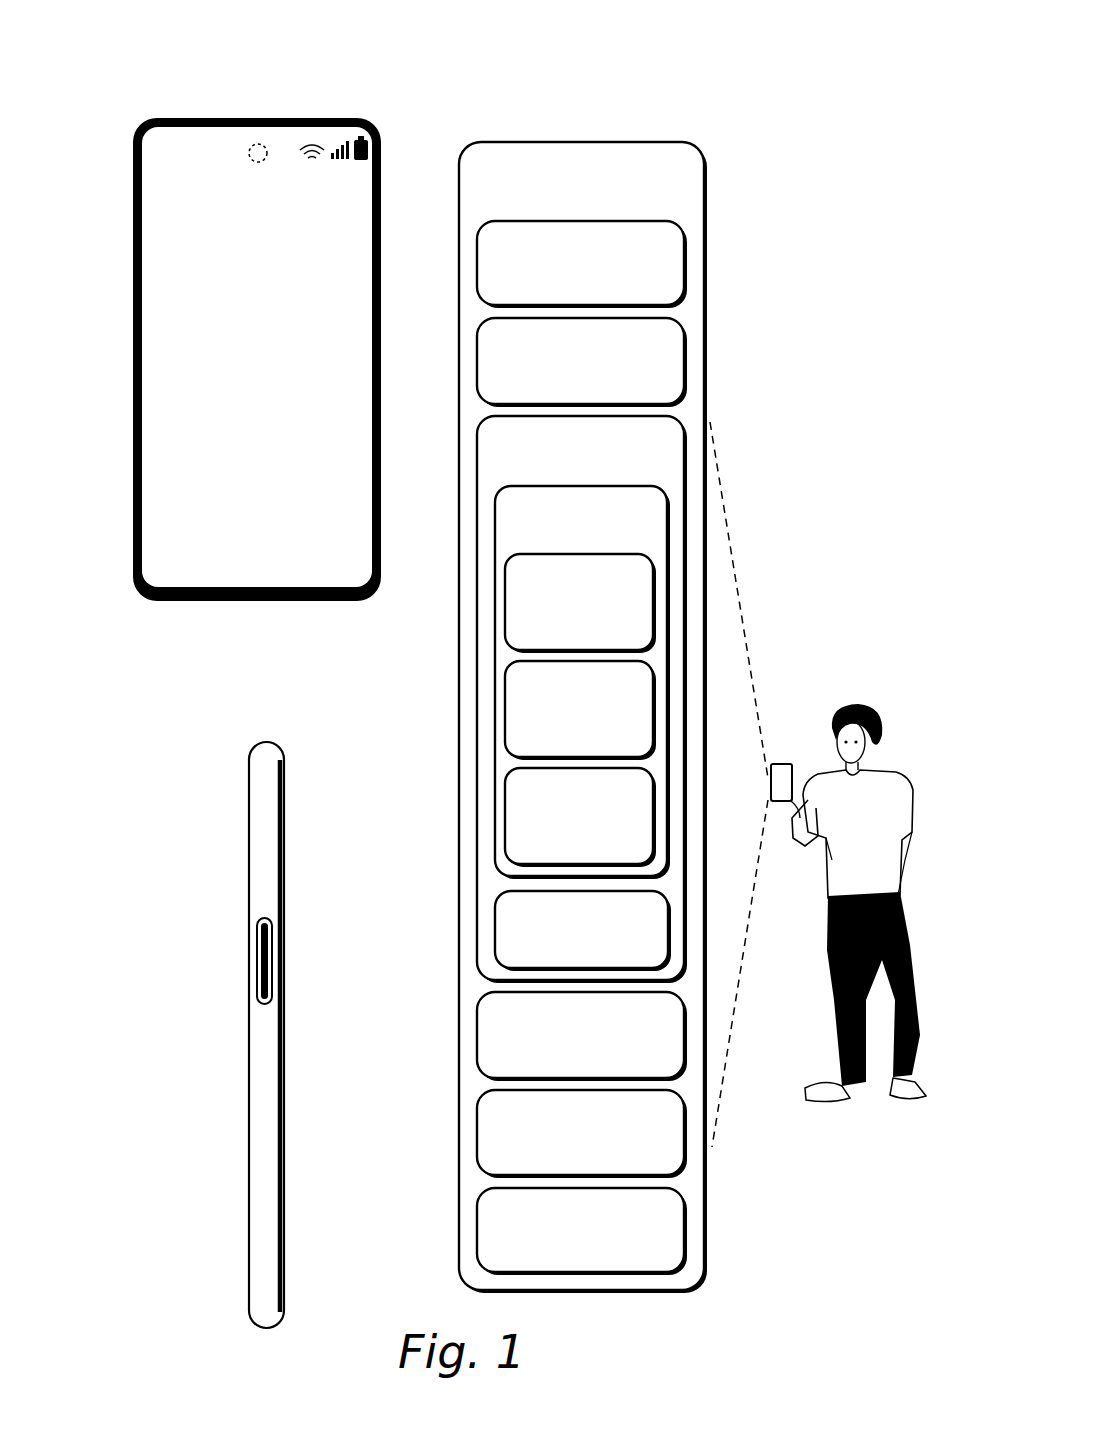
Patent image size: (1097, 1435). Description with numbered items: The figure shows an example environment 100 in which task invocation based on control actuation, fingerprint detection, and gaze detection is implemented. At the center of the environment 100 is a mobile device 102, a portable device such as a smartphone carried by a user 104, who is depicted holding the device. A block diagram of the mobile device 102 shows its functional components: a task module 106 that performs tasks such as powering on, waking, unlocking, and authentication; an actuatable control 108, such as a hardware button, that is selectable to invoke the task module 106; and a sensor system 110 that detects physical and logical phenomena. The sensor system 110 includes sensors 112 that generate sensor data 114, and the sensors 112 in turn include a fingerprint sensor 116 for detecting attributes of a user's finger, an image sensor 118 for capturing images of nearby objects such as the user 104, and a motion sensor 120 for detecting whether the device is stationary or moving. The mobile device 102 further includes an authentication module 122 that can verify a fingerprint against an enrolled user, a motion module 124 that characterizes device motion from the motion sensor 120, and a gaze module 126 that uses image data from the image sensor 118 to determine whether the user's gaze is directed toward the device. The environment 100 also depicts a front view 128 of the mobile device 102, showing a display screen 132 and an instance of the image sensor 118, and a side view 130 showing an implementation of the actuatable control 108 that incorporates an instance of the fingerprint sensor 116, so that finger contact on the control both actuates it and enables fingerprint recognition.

The environment 100 is at (808, 68).
The mobile device 102 is at (283, 800).
The user 104 is at (890, 790).
The task module 106 is at (582, 264).
The actuatable control 108 is at (200, 893).
The sensor system 110 is at (582, 699).
The sensors 112 is at (582, 682).
The sensor data 114 is at (583, 931).
The fingerprint sensor 116 is at (205, 940).
The image sensor 118 is at (225, 86).
The motion sensor 120 is at (580, 817).
The authentication module 122 is at (582, 1036).
The motion module 124 is at (582, 1134).
The gaze module 126 is at (582, 1231).
The front view 128 is at (158, 78).
The side view 130 is at (184, 776).
The display screen 132 is at (257, 375).